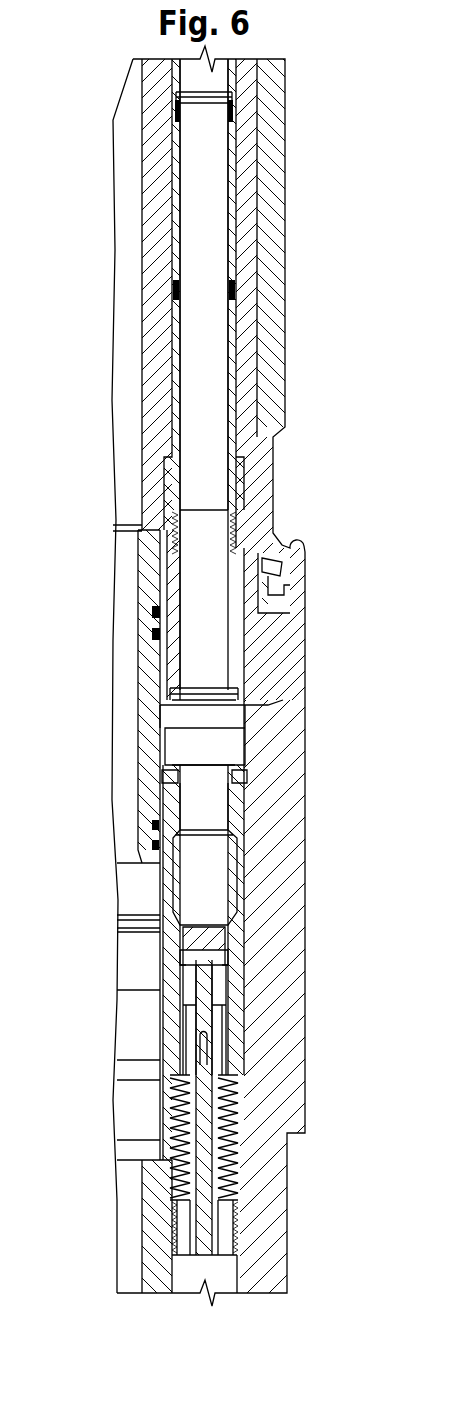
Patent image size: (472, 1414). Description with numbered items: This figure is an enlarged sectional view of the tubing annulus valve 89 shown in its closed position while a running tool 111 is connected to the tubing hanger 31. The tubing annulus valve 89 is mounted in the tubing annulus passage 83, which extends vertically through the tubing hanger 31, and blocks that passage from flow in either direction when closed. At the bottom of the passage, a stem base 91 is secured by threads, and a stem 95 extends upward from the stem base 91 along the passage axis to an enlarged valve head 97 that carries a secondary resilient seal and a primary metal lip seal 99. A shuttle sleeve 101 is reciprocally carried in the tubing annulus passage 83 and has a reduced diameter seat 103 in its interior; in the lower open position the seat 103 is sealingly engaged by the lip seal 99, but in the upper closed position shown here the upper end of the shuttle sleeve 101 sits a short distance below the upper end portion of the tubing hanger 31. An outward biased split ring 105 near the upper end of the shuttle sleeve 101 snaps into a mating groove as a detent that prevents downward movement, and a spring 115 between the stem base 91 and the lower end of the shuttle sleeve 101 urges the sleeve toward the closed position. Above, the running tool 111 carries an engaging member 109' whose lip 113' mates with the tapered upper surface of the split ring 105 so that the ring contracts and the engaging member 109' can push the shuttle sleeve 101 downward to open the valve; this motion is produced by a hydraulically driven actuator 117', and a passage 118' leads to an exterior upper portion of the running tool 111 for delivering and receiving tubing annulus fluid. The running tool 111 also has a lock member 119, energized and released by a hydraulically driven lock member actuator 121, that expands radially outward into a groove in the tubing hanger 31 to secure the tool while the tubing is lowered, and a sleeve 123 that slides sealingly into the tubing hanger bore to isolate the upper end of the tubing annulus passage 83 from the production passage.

The running tool 111 is at (336, 169).
The passage 118' is at (141, 374).
The actuator 117' is at (143, 306).
The lock member actuator 121 is at (277, 353).
The lock member 119 is at (282, 570).
The engaging member 109' is at (100, 728).
The sleeve 123 is at (147, 670).
The lip 113' is at (140, 710).
The tubing annulus passage 83 is at (235, 745).
The split ring 105 is at (250, 777).
The tubing hanger 31 is at (295, 825).
The valve head 97 is at (235, 888).
The seat 103 is at (240, 940).
The tubing annulus valve 89 is at (258, 956).
The shuttle sleeve 101 is at (172, 935).
The lip seal 99 is at (167, 947).
The spring 115 is at (180, 1122).
The stem 95 is at (178, 1180).
The stem base 91 is at (240, 1226).